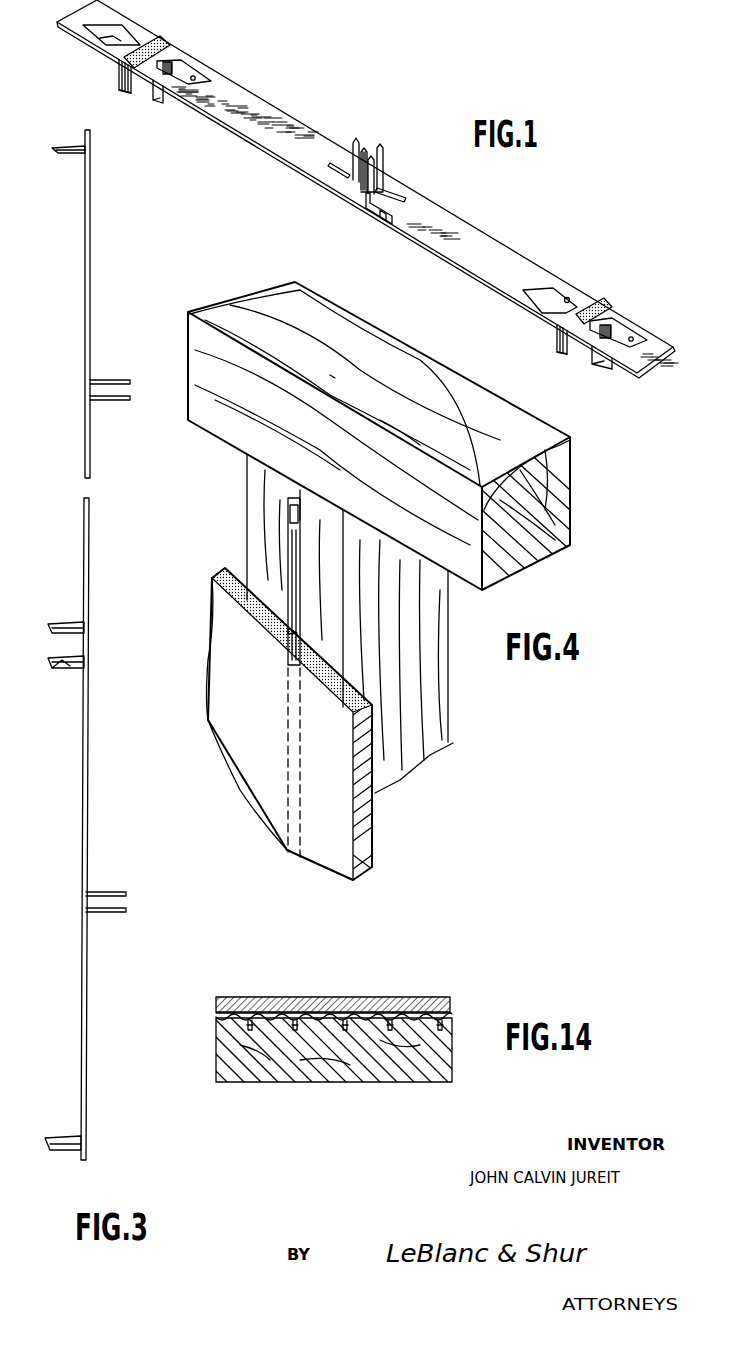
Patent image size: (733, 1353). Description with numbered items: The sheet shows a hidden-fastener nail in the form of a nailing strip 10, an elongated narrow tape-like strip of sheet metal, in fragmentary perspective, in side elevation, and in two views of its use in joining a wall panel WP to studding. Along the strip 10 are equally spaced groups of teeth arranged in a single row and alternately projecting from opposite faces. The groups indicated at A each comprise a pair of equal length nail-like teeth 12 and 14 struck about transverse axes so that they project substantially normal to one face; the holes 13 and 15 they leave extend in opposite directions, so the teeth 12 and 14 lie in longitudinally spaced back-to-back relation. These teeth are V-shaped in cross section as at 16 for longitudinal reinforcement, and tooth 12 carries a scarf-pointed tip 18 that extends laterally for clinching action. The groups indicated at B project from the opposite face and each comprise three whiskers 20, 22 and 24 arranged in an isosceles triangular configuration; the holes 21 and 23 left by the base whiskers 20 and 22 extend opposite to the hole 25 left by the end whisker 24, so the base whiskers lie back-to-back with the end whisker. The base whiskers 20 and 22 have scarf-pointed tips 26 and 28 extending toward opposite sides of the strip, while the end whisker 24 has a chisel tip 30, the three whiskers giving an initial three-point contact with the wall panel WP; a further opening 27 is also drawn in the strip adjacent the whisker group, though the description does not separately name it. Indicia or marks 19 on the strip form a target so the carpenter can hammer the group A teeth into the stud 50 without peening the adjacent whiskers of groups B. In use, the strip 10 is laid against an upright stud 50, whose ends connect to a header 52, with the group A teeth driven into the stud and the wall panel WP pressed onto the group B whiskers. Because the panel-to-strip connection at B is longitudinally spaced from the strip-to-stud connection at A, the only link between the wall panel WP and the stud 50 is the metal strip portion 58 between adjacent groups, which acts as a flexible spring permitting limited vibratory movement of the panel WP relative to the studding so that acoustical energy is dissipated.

In FIG. 3, the nailing strip 10 is at (86, 783).
In FIG. 4, the nailing strip 10 is at (300, 590).
In FIG. 1, the nail-like tooth 12 is at (119, 78).
In FIG. 1, the hole 13 is at (110, 37).
In FIG. 1, the nail-like tooth 14 is at (176, 70).
In FIG. 1, the hole 15 is at (195, 78).
In FIG. 1, the V-shaped cross section 16 is at (170, 63).
In FIG. 3, the V-shaped cross section 16 is at (67, 658).
In FIG. 1, the scarf-pointed tip 18 is at (128, 93).
In FIG. 1, the indicia or marks 19 is at (160, 44).
In FIG. 1, the whisker 20 is at (385, 170).
In FIG. 1, the hole 21 is at (158, 101).
In FIG. 1, the whisker 22 is at (368, 198).
In FIG. 1, the hole 23 is at (385, 219).
In FIG. 1, the end whisker 24 is at (363, 150).
In FIG. 1, the hole 25 is at (343, 175).
In FIG. 1, the scarf-pointed tip 26 is at (381, 145).
In FIG. 1, the slot 27 is at (400, 191).
In FIG. 1, the scarf-pointed tip 28 is at (371, 156).
In FIG. 1, the chisel tip 30 is at (355, 140).
In FIG. 4, the stud 50 is at (247, 506).
In FIG. 14, the stud 50 is at (345, 1068).
In FIG. 4, the header 52 is at (278, 418).
In FIG. 14, the metal strip portion 58 is at (355, 1015).
In FIG. 1, the teeth group A is at (160, 113).
In FIG. 3, the teeth group A is at (42, 624).
In FIG. 14, the teeth group A is at (244, 1023).
In FIG. 1, the whisker teeth group B is at (398, 157).
In FIG. 3, the whisker teeth group B is at (110, 400).
In FIG. 14, the whisker teeth group B is at (400, 1012).
In FIG. 4, the wall panel WP is at (216, 640).